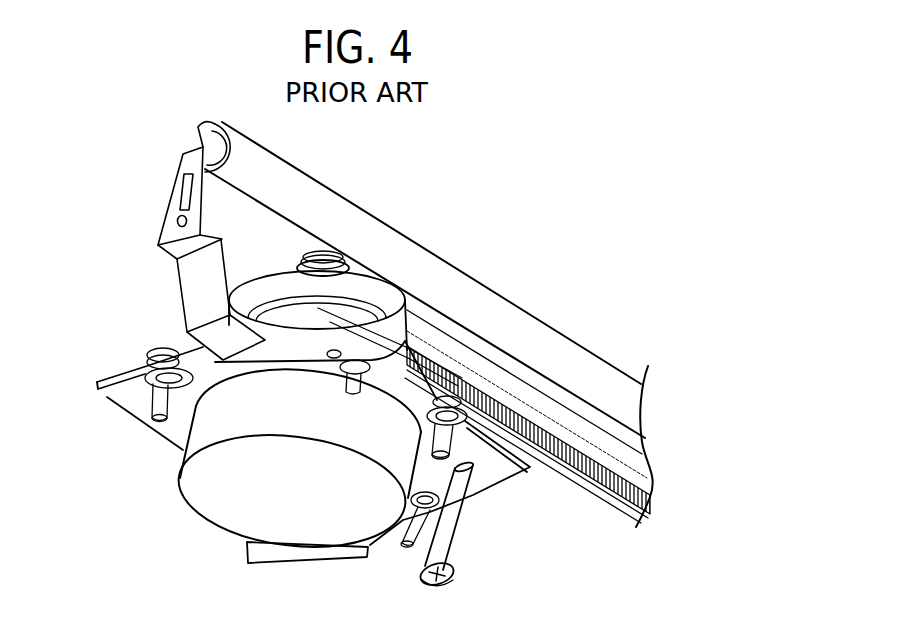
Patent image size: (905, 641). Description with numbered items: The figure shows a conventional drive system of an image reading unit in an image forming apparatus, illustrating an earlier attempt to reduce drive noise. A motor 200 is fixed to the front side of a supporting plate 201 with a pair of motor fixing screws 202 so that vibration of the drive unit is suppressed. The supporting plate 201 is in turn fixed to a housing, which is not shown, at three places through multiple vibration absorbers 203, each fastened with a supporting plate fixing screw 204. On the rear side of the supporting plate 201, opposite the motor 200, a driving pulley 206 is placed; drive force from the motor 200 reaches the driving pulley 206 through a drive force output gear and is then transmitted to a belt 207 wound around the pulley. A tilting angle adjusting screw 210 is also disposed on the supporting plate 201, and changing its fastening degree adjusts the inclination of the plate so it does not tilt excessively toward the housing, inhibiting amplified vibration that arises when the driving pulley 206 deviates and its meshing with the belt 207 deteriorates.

The motor 200 is at (223, 513).
The supporting plate 201 is at (178, 423).
The motor fixing screw 202 is at (350, 388).
The vibration absorber 203 is at (145, 380).
The supporting plate fixing screw 204 is at (150, 403).
The driving pulley 206 is at (293, 267).
The belt 207 is at (492, 370).
The tilting angle adjusting screw 210 is at (455, 530).